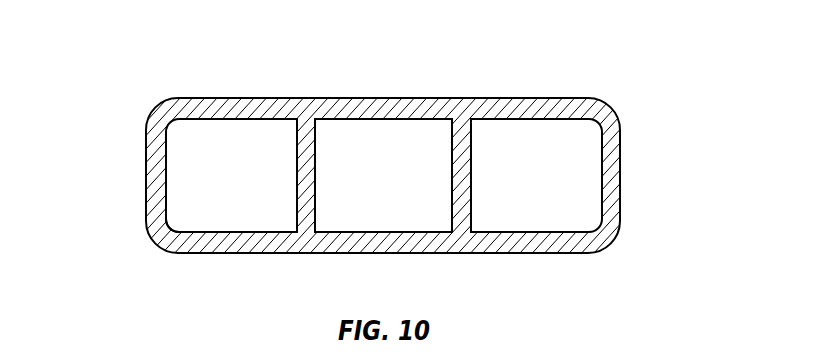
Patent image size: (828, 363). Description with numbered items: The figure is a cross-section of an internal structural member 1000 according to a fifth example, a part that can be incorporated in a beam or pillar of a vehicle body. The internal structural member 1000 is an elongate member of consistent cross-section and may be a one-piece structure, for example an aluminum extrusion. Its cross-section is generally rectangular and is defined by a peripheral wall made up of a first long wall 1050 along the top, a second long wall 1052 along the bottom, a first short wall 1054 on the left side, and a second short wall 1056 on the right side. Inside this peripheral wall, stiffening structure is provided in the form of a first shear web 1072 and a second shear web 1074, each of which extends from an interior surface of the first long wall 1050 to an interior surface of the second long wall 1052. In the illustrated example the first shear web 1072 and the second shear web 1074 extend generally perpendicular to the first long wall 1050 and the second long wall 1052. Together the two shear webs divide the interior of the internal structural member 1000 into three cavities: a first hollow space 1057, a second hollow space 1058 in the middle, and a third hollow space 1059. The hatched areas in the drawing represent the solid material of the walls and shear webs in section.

The internal structural member 1000 is at (117, 67).
The first long wall 1050 is at (473, 99).
The second long wall 1052 is at (180, 232).
The first short wall 1054 is at (147, 183).
The second short wall 1056 is at (620, 187).
The first hollow space 1057 is at (267, 172).
The second hollow space 1058 is at (415, 172).
The third hollow space 1059 is at (558, 172).
The first shear web 1072 is at (315, 216).
The second shear web 1074 is at (471, 215).